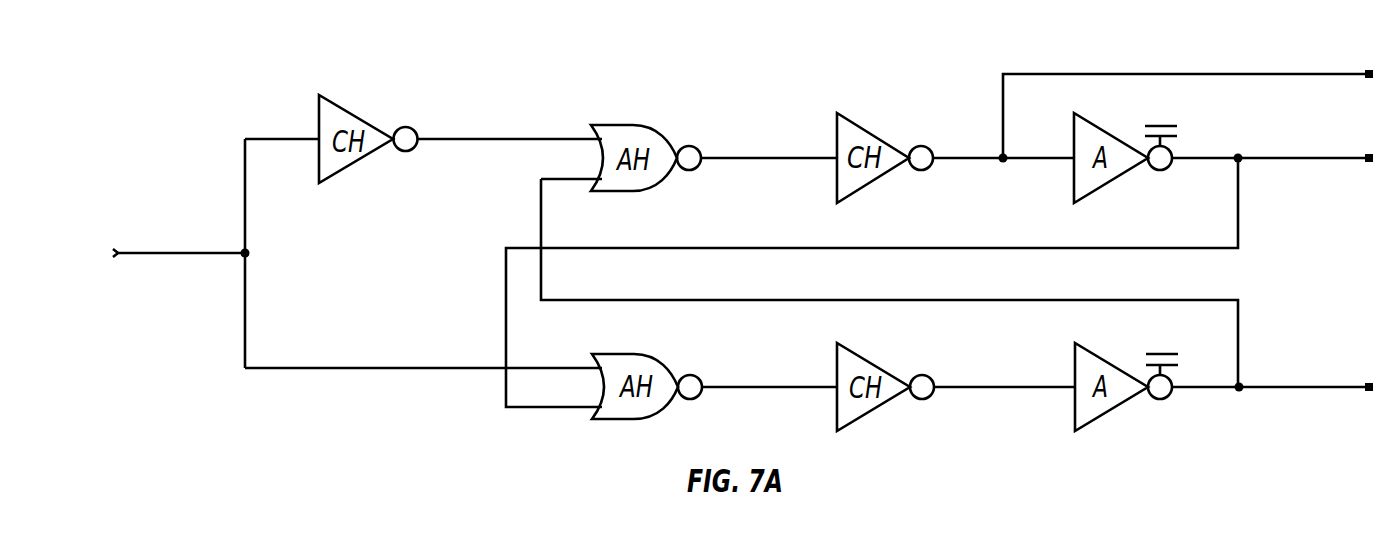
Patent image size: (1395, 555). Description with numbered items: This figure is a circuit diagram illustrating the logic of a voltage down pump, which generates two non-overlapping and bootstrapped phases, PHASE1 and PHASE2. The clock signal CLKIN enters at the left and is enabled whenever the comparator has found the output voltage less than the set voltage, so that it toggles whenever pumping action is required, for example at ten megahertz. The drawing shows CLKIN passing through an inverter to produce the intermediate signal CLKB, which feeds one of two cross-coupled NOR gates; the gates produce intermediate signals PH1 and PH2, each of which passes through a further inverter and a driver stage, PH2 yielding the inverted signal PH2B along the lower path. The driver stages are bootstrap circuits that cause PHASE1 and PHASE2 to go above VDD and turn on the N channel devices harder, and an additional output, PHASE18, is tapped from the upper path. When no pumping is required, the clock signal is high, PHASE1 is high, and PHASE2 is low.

The clock signal CLKIN is at (357, 253).
The inverted clock signal CLKB is at (510, 121).
The phase 1 intermediate signal PH1 is at (769, 140).
The phase 2 intermediate signal PH2 is at (769, 369).
The inverted phase 2 signal PH2B is at (1004, 369).
The phase 18 output PHASE18 is at (1188, 98).
The first non-overlapping bootstrapped phase PHASE1 is at (939, 264).
The second non-overlapping bootstrapped phase PHASE2 is at (1272, 368).